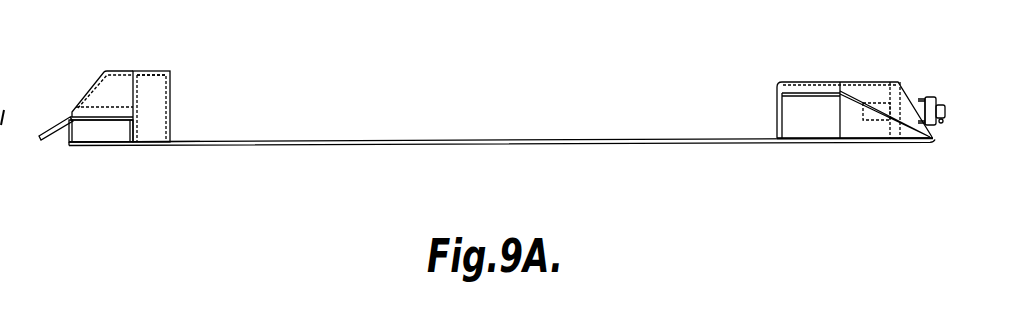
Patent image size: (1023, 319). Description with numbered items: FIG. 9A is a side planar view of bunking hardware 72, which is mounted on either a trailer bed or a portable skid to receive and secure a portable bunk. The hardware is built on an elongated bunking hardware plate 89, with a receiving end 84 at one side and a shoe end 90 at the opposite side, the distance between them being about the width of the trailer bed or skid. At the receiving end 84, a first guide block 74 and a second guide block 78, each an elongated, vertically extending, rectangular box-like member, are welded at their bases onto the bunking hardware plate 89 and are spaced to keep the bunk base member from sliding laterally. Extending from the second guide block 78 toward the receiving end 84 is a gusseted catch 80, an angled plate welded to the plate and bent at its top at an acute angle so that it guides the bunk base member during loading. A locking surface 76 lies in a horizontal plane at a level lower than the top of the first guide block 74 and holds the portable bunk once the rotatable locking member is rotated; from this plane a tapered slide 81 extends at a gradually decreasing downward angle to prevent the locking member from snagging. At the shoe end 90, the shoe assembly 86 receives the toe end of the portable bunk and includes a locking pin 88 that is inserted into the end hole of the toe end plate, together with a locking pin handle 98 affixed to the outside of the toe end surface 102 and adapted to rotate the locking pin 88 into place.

The bunking hardware 72 is at (514, 107).
The first guide block 74 is at (162, 95).
The locking surface 76 is at (86, 122).
The second guide block 78 is at (150, 77).
The gusseted catch 80 is at (90, 85).
The slide 81 is at (53, 139).
The receiving end 84 is at (143, 148).
The shoe assembly 86 is at (885, 72).
The locking pin 88 is at (873, 102).
The bunking hardware plate 89 is at (522, 147).
The shoe end 90 is at (868, 144).
The locking pin handle 98 is at (946, 119).
The toe end surface 102 is at (894, 88).